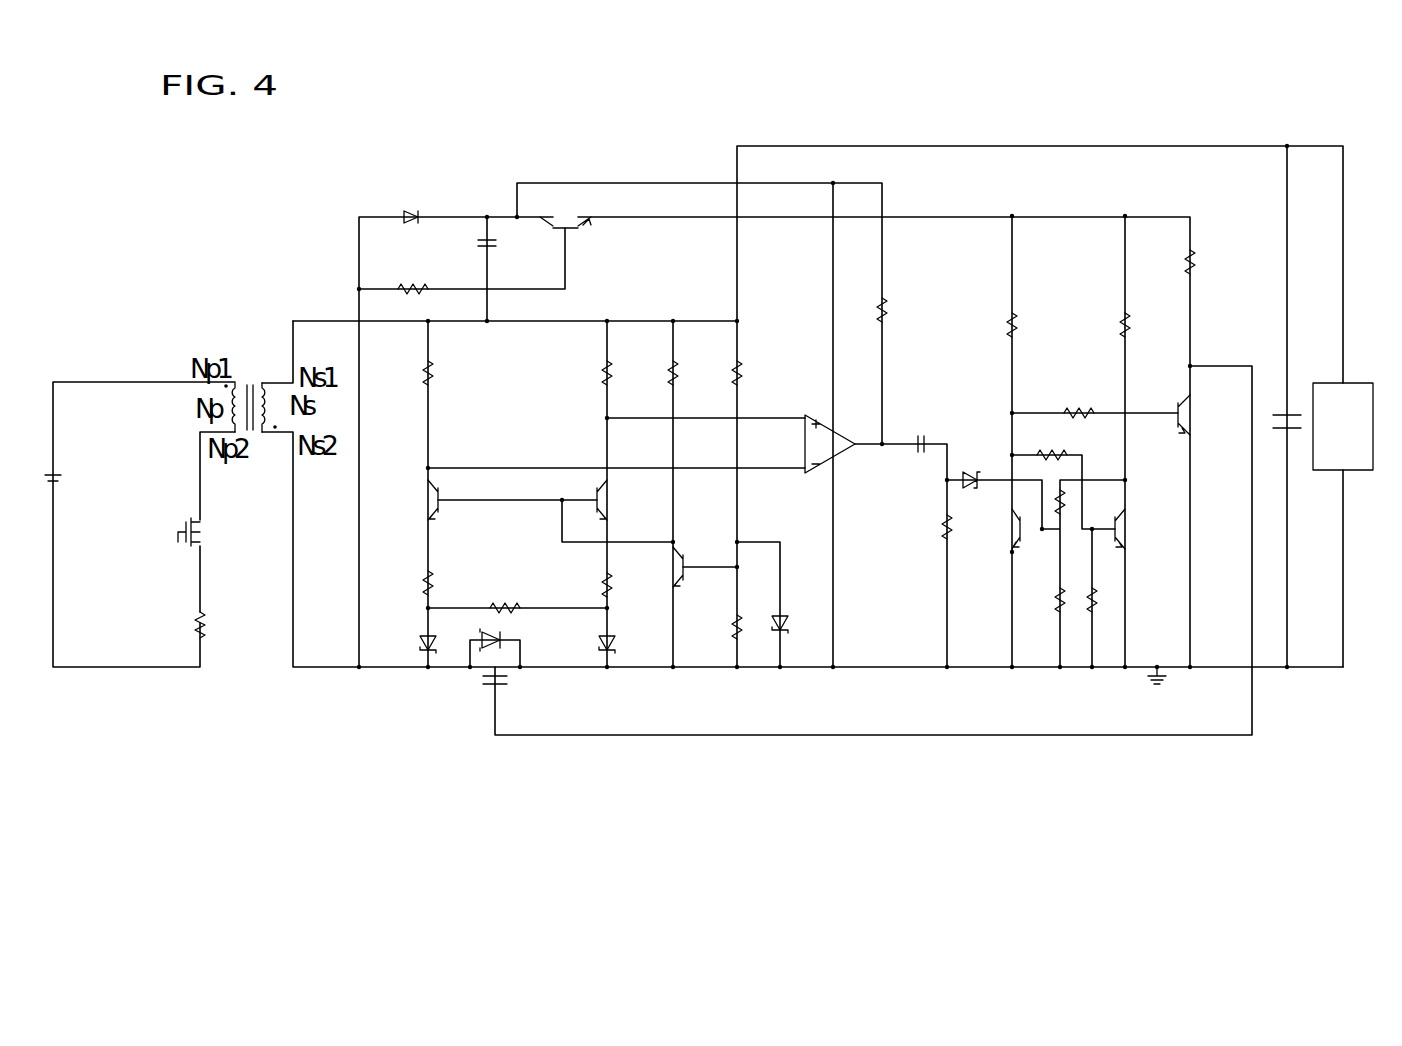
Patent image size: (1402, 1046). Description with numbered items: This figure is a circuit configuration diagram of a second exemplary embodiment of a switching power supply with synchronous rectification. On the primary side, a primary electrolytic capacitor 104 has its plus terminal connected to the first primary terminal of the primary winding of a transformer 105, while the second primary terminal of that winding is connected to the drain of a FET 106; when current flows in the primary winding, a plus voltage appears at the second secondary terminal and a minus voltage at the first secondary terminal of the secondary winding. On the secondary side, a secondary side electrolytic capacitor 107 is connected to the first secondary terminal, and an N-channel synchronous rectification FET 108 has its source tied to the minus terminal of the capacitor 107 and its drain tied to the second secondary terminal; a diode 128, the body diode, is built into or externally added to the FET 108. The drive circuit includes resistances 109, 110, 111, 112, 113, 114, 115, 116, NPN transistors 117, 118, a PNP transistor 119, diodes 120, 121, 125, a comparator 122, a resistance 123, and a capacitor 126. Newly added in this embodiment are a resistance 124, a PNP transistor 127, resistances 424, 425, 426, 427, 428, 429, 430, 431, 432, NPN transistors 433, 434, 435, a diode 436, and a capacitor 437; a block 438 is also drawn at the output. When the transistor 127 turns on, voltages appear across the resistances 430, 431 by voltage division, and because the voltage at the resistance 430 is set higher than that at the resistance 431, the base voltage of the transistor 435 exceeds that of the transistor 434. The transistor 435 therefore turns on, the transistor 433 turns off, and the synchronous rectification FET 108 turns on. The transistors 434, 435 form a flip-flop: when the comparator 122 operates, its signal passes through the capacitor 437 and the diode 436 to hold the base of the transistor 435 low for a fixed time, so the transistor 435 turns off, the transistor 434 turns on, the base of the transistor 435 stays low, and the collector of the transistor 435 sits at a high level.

The primary electrolytic capacitor 104 is at (58, 478).
The transformer 105 is at (250, 383).
The FET 106 is at (176, 537).
The secondary side electrolytic capacitor 107 is at (1273, 415).
The synchronous rectification FET 108 is at (498, 686).
The resistance 109 is at (434, 374).
The resistance 110 is at (613, 374).
The resistance 111 is at (679, 374).
The resistance 112 is at (743, 372).
The resistance 113 is at (732, 628).
The resistance 114 is at (425, 578).
The resistance 115 is at (612, 588).
The resistance 116 is at (503, 602).
The NPN transistor 117 is at (441, 508).
The NPN transistor 118 is at (601, 498).
The PNP transistor 119 is at (686, 560).
The diode 120 is at (423, 640).
The diode 121 is at (610, 640).
The comparator 122 is at (808, 416).
The resistance 123 is at (886, 310).
The resistance 124 is at (432, 274).
The diode 125 is at (412, 210).
The capacitor 126 is at (496, 243).
The PNP transistor 127 is at (567, 229).
The diode 128 is at (502, 640).
The resistance 424 is at (1008, 325).
The resistance 425 is at (1121, 325).
The resistance 426 is at (1195, 262).
The resistance 427 is at (1072, 410).
The resistance 428 is at (1050, 454).
The resistance 429 is at (1060, 482).
The resistance 430 is at (1056, 598).
The resistance 431 is at (1096, 600).
The resistance 432 is at (942, 527).
The NPN transistor 433 is at (1178, 405).
The NPN transistor 434 is at (1117, 520).
The NPN transistor 435 is at (1017, 532).
The diode 436 is at (970, 470).
The capacitor 437 is at (921, 436).
The load 438 is at (1330, 383).